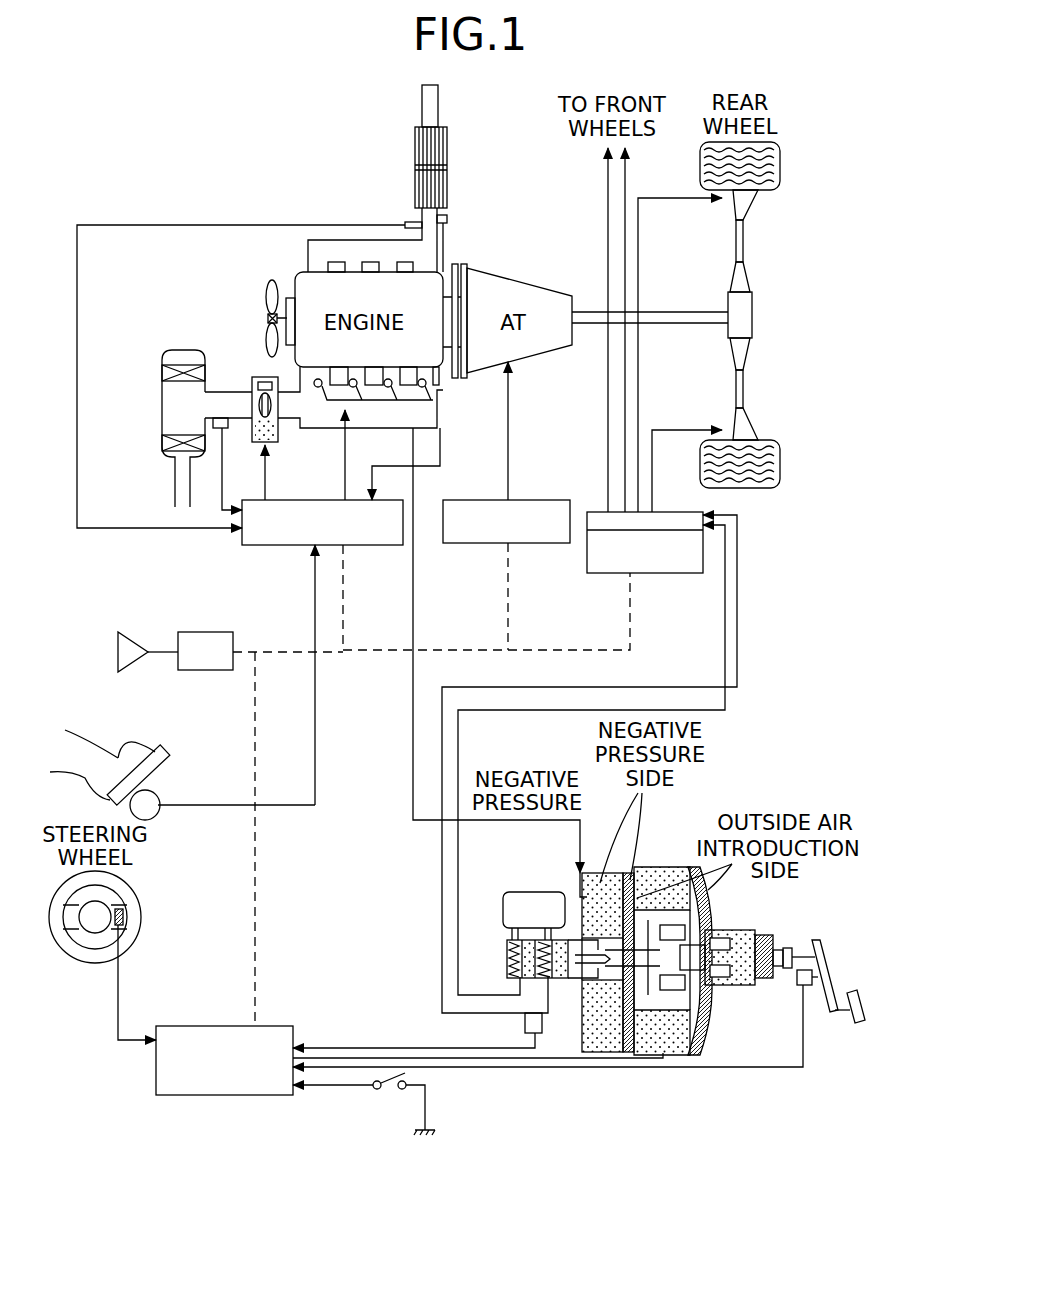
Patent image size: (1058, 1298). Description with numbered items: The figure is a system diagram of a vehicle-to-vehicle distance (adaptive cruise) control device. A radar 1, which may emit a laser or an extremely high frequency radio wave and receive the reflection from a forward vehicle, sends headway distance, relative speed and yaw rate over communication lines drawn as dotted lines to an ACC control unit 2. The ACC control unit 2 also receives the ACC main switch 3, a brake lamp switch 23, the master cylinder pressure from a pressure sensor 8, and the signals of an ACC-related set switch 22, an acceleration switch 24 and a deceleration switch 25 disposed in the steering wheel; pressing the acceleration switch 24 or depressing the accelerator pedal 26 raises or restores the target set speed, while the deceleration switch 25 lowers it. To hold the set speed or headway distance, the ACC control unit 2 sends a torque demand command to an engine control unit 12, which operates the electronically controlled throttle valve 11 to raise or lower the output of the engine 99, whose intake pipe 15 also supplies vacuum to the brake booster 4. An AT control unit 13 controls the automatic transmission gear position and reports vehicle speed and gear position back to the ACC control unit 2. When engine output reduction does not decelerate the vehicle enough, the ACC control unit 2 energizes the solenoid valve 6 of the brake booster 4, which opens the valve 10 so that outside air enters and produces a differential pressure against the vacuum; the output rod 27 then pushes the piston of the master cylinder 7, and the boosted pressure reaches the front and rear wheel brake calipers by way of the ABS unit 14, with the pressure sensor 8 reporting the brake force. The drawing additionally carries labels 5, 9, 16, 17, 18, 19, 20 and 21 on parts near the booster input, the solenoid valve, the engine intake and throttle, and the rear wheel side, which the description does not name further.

The radar 1 is at (197, 672).
The ACC control unit 2 is at (213, 1026).
The ACC main switch 3 is at (385, 1095).
The brake booster 4 is at (655, 867).
The brake pedal 5 is at (853, 1024).
The solenoid valve 6 is at (705, 1003).
The master cylinder 7 is at (560, 980).
The pressure sensor 8 is at (525, 1025).
The negative pressure valve 9 is at (533, 892).
The valve 10 is at (755, 935).
The electronically controlled throttle valve 11 is at (258, 377).
The engine control unit 12 is at (360, 545).
The AT control unit 13 is at (537, 543).
The ABS unit 14 is at (665, 573).
The intake pipe 15 is at (425, 430).
The throttle sensor 16 is at (405, 222).
The throttle valve 17 is at (415, 140).
The throttle actuator 18 is at (447, 217).
The air flow sensor 19 is at (226, 430).
The rear wheel 20 is at (760, 440).
The rear wheel 21 is at (755, 192).
The ACC-related set switch 22 is at (123, 913).
The brake lamp switch 23 is at (803, 988).
The acceleration switch 24 is at (123, 925).
The deceleration switch 25 is at (125, 905).
The accelerator pedal 26 is at (172, 757).
The output rod 27 is at (608, 963).
The engine 99 is at (293, 278).